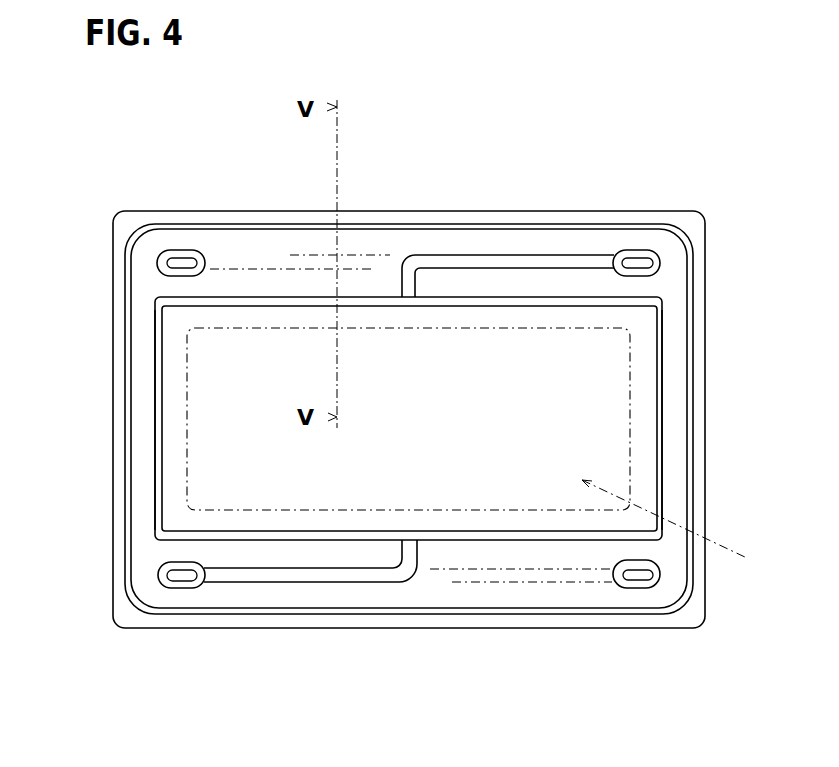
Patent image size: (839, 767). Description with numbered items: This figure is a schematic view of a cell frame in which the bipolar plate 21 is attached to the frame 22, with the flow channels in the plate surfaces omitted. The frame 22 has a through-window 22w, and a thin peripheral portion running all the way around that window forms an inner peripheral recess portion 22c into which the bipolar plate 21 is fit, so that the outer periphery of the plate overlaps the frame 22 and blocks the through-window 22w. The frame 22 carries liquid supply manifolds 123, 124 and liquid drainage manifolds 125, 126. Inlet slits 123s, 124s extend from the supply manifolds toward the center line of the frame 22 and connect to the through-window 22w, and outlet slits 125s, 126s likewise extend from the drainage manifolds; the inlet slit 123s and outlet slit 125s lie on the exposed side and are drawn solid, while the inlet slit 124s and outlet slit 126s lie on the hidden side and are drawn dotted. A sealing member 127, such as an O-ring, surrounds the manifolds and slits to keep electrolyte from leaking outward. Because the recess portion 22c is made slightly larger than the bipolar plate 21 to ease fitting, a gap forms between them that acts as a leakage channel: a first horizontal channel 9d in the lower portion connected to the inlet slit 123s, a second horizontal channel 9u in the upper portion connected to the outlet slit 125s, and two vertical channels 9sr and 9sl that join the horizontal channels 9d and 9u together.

The frame 22 is at (125, 211).
The bipolar plate 21 is at (603, 377).
The sealing member 127 is at (690, 476).
The inner peripheral recess portion 22c is at (270, 328).
The through-window 22w is at (747, 558).
The liquid drainage manifold 126 is at (180, 258).
The liquid drainage manifold 125 is at (633, 262).
The liquid supply manifold 123 is at (180, 577).
The liquid supply manifold 124 is at (638, 580).
The outlet slit 126s is at (258, 256).
The outlet slit 125s is at (528, 257).
The inlet slit 123s is at (260, 575).
The inlet slit 124s is at (502, 577).
The second horizontal channel 9u is at (366, 299).
The first horizontal channel 9d is at (365, 545).
The vertical channel 9sl is at (157, 425).
The vertical channel 9sr is at (660, 430).